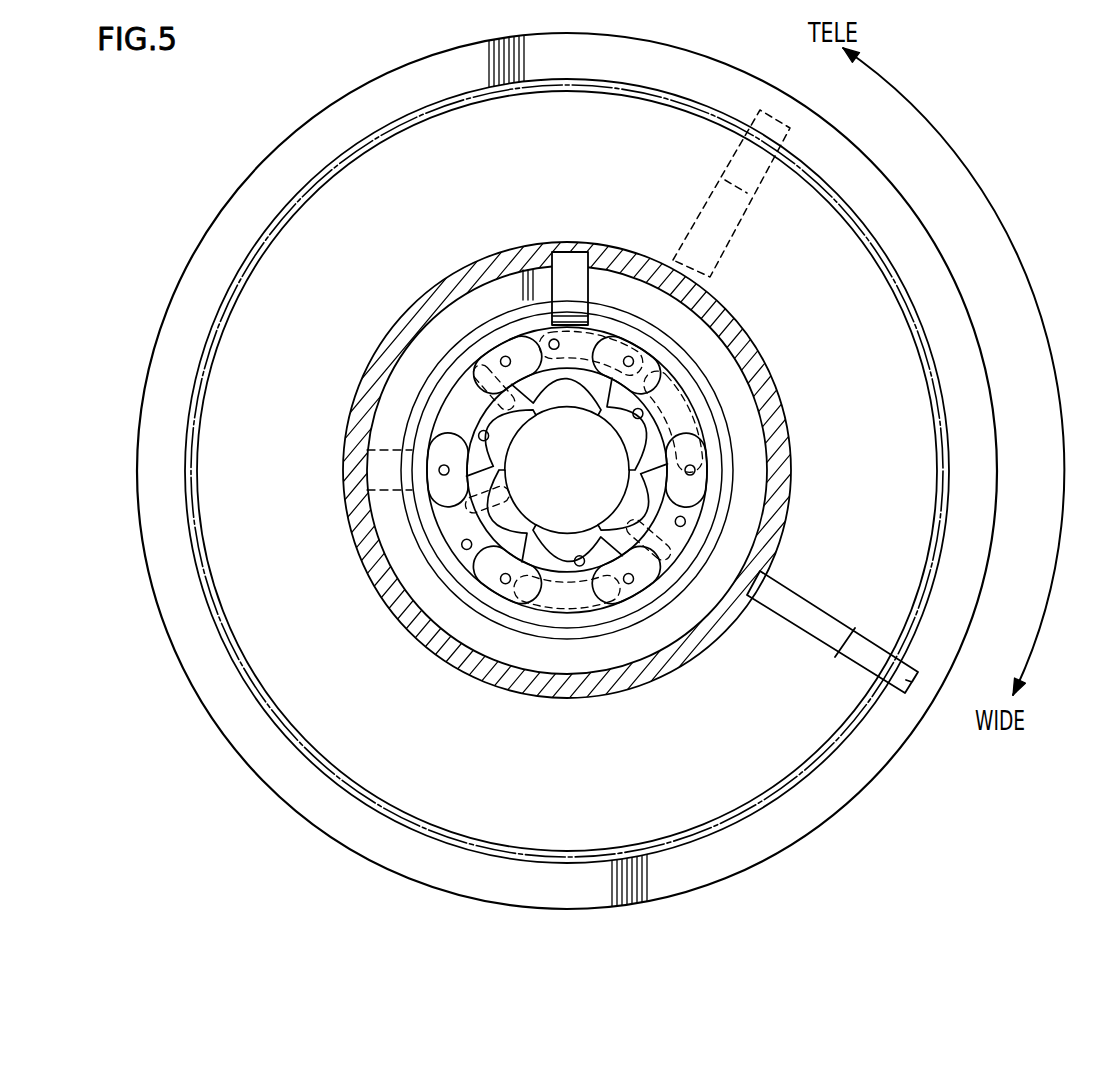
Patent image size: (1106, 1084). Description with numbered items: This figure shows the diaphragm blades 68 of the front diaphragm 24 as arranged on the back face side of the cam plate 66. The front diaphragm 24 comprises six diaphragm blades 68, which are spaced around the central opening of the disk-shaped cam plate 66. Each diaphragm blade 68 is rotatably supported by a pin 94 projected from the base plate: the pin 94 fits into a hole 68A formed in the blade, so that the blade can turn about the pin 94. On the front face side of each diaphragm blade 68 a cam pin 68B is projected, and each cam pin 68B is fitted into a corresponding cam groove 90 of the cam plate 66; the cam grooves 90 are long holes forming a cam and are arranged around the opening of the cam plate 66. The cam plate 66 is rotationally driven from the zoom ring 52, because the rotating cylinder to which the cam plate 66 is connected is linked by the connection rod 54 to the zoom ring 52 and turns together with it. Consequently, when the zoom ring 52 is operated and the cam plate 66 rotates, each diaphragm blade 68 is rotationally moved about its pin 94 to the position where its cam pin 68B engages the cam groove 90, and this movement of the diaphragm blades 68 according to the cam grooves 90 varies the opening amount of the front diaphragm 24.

The front diaphragm 24 is at (423, 363).
The zoom ring 52 is at (708, 86).
The connection rod 54 is at (702, 198).
The cam plate 66 is at (781, 410).
The diaphragm blade 68 is at (610, 305).
The hole 68A is at (508, 363).
The cam pin 68B is at (590, 330).
The cam groove 90 is at (720, 352).
The pin 94 is at (505, 360).